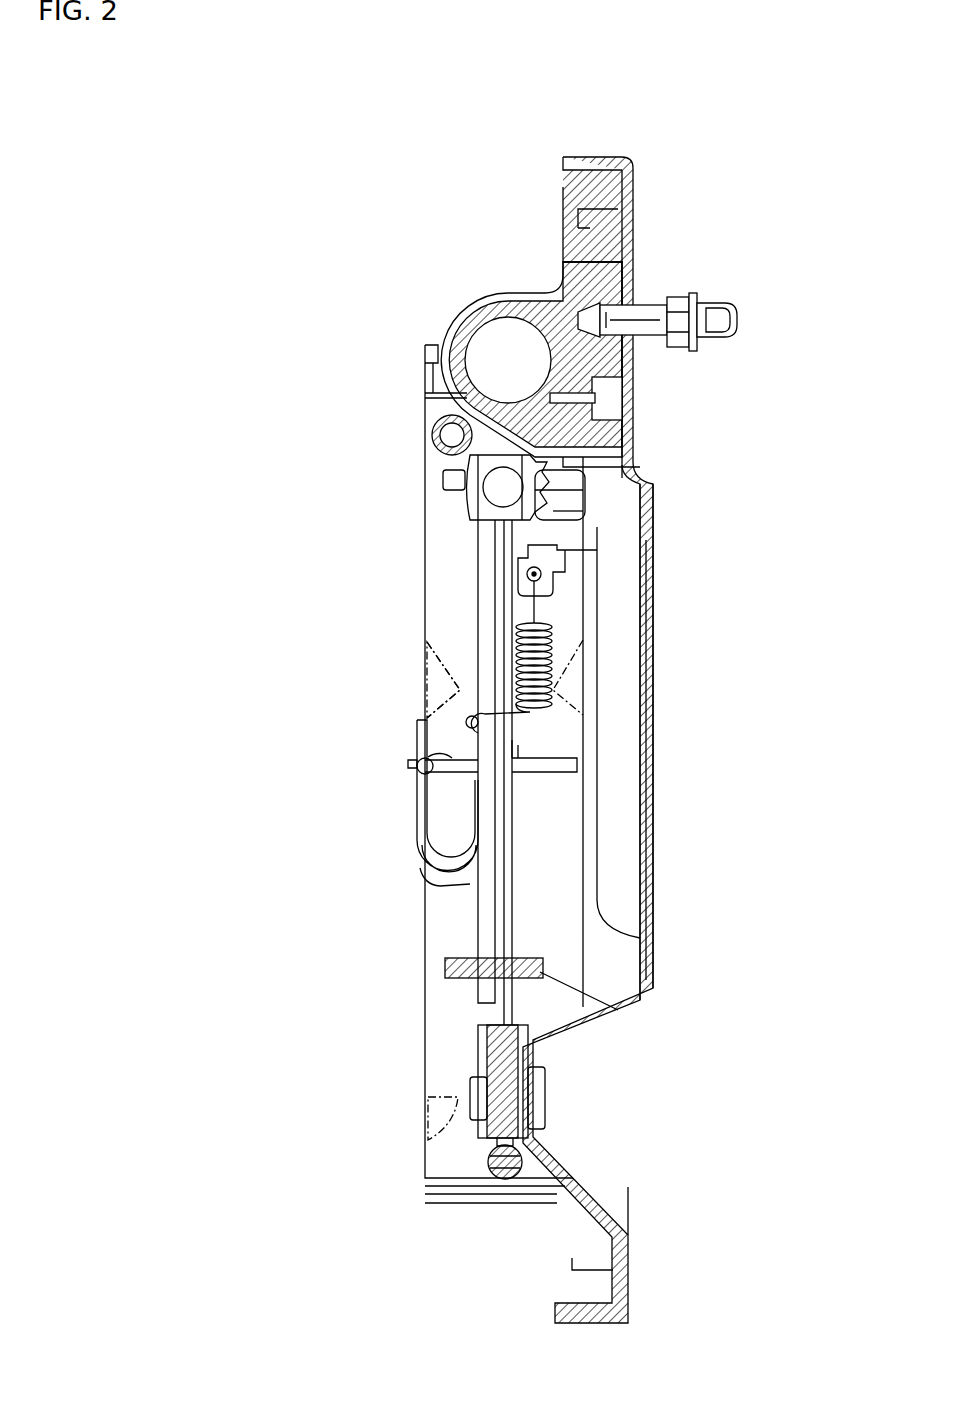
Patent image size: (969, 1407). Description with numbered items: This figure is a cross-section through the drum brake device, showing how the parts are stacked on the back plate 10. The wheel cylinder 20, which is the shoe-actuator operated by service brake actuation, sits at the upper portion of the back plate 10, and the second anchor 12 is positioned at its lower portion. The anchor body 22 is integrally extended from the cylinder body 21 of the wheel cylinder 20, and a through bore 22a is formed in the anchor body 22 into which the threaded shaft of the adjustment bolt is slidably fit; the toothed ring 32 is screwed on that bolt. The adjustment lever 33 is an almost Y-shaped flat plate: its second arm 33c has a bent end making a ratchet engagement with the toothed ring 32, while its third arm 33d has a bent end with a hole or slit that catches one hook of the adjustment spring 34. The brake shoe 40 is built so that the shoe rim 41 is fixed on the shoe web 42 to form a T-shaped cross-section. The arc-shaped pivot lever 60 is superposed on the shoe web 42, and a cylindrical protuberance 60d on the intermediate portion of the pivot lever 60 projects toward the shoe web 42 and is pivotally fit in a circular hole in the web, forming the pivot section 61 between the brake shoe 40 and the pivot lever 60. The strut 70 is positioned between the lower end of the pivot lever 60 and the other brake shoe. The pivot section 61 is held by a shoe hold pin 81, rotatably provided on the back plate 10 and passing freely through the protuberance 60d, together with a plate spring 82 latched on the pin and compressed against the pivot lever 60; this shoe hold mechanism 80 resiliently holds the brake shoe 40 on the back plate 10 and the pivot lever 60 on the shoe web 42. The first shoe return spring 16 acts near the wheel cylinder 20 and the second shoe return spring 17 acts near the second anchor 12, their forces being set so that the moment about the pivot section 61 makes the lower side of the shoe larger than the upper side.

The back plate 10 is at (640, 206).
The second anchor 12 is at (470, 1057).
The first shoe return spring 16 is at (434, 416).
The second shoe return spring 17 is at (487, 1158).
The wheel cylinder 20 is at (480, 285).
The cylinder body 21 is at (566, 259).
The anchor body 22 is at (468, 497).
The through bore 22a is at (447, 478).
The toothed ring 32 is at (545, 476).
The adjustment lever 33 is at (568, 543).
The second arm 33c is at (558, 512).
The third arm 33d is at (553, 575).
The adjustment spring 34 is at (555, 660).
The brake shoe 40 is at (420, 583).
The shoe rim 41 is at (445, 612).
The shoe web 42 is at (508, 873).
The pivot lever 60 is at (490, 905).
The cylindrical protuberance 60d is at (520, 760).
The pivot section 61 is at (517, 793).
The strut 70 is at (580, 1002).
The shoe hold mechanism 80 is at (412, 792).
The shoe hold pin 81 is at (421, 758).
The plate spring 82 is at (433, 880).